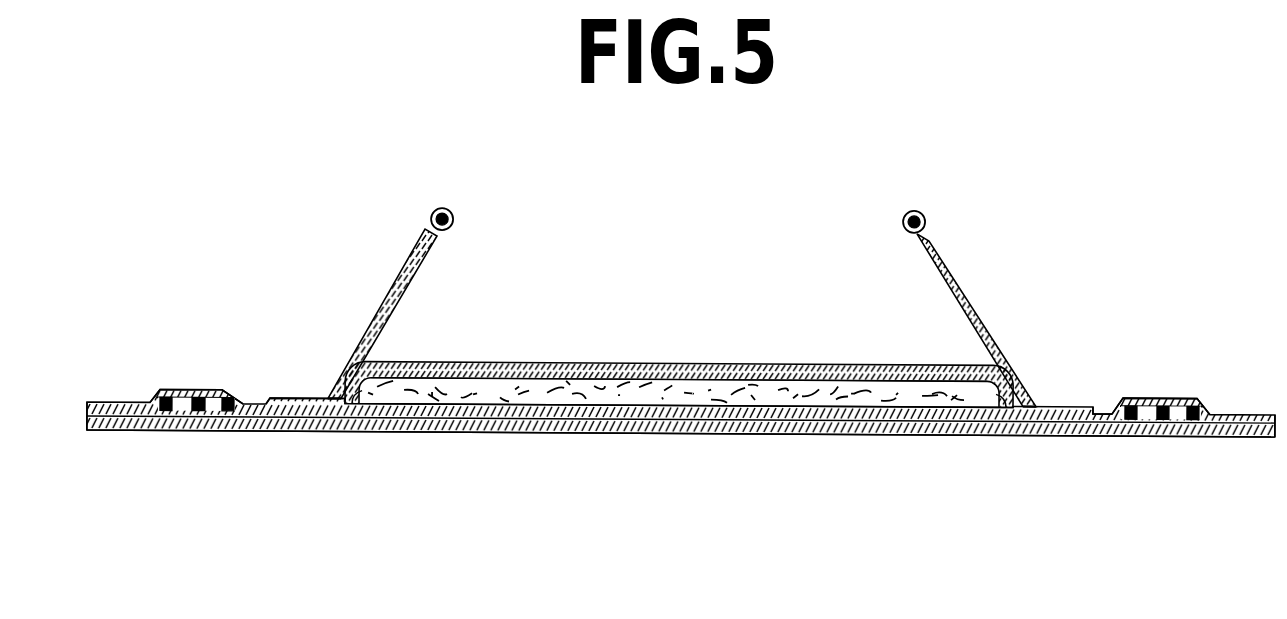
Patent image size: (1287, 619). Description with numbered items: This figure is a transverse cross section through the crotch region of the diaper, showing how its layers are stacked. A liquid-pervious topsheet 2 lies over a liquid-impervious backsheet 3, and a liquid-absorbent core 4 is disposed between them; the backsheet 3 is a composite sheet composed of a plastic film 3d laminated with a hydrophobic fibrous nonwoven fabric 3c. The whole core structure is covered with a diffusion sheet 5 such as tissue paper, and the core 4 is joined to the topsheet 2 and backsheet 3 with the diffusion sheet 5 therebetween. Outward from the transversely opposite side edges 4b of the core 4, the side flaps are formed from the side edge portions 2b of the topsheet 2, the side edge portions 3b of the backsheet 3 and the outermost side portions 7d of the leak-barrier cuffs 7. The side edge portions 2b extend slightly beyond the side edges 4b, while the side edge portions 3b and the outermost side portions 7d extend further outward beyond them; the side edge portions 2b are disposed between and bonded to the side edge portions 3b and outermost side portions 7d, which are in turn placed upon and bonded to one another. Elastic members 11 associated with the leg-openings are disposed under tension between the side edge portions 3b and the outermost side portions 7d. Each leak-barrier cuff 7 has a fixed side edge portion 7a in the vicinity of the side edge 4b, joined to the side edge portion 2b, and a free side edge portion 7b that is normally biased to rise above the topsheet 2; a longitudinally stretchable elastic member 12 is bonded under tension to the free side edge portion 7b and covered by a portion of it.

The topsheet 2 is at (660, 372).
The side edge portion of the topsheet 2b is at (285, 431).
The backsheet 3 is at (888, 438).
The side edge portion of the backsheet 3b is at (112, 429).
The hydrophobic fibrous nonwoven fabric 3c is at (803, 438).
The plastic film 3d is at (713, 438).
The liquid-absorbent core 4 is at (762, 392).
The side edge of the core 4b is at (358, 411).
The diffusion sheet 5 is at (586, 374).
The leak-barrier cuff 7 is at (378, 290).
The fixed side edge portion of the leak-barrier cuff 7a is at (300, 397).
The free side edge portion of the leak-barrier cuff 7b is at (428, 208).
The outermost side portion of the leak-barrier cuff 7d is at (195, 400).
The elastic member associated with the leg-opening 11 is at (217, 411).
The elastic member 12 is at (452, 206).